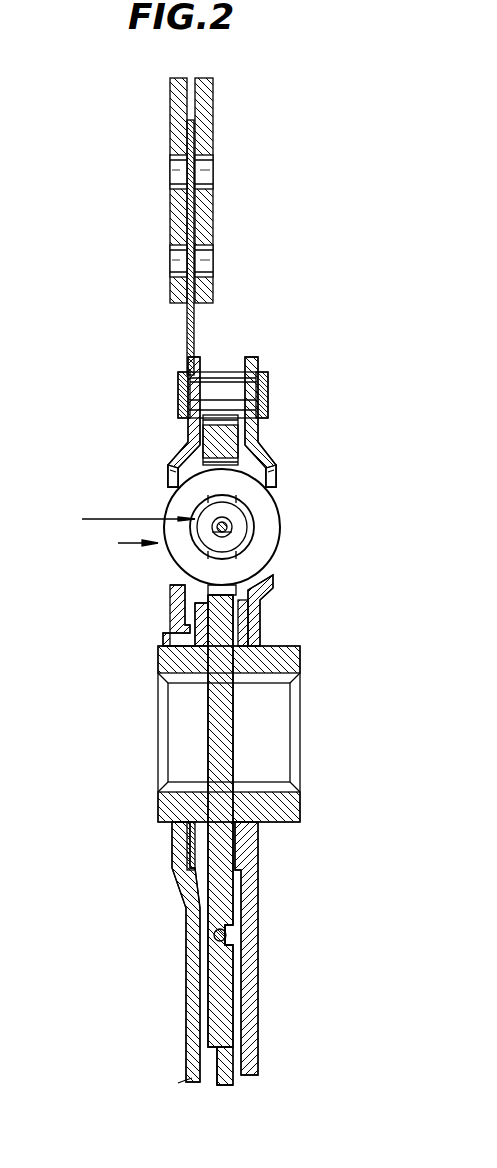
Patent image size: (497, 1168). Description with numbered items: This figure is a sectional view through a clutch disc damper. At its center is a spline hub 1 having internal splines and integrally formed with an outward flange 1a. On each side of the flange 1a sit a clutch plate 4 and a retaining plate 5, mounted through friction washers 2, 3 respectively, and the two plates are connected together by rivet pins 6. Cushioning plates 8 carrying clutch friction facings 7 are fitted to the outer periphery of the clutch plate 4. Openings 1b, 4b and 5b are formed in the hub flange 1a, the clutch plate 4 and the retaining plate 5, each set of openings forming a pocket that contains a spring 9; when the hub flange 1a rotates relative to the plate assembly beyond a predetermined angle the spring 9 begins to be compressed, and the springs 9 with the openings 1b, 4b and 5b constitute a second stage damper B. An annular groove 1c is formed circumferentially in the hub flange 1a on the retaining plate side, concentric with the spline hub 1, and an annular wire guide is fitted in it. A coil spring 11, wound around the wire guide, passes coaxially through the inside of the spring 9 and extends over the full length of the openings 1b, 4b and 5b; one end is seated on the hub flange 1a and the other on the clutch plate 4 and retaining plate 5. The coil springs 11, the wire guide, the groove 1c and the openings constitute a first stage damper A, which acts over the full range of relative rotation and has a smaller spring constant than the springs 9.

The spline hub 1 is at (298, 662).
The outward flange 1a is at (218, 962).
The opening 1b is at (252, 458).
The annular groove 1c is at (234, 935).
The friction washer 2 is at (190, 850).
The friction washer 3 is at (252, 848).
The clutch plate 4 is at (192, 430).
The opening 4b is at (170, 483).
The retaining plate 5 is at (258, 422).
The opening 5b is at (272, 480).
The rivet pin 6 is at (226, 384).
The clutch friction facing 7 is at (200, 211).
The cushioning plate 8 is at (186, 340).
The spring 9 is at (263, 557).
The coil spring 11 is at (228, 528).
The first stage damper A is at (80, 524).
The second stage damper B is at (118, 555).